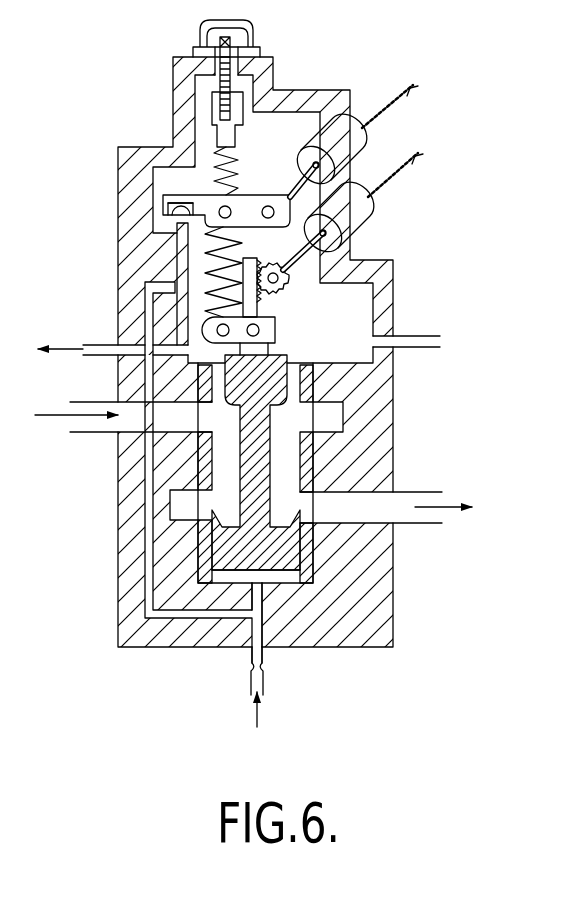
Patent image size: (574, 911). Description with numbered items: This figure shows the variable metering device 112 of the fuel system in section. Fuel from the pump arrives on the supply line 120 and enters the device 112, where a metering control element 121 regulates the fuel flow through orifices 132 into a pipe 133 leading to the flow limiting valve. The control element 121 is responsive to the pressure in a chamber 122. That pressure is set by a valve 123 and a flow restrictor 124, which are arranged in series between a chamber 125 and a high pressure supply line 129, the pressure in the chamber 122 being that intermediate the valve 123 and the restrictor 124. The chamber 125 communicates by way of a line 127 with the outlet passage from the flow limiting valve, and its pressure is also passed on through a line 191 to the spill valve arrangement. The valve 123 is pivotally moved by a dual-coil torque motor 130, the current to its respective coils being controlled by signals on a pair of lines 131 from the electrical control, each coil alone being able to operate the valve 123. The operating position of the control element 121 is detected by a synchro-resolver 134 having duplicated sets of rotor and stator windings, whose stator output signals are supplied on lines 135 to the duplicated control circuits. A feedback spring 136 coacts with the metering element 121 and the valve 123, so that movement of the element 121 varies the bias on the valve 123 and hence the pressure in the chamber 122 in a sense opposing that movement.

The variable metering device 112 is at (156, 662).
The supply line 120 is at (95, 423).
The metering control element 121 is at (312, 550).
The chamber 122 is at (282, 573).
The valve 123 is at (160, 221).
The flow restrictor 124 is at (261, 666).
The chamber 125 is at (281, 125).
The line 127 is at (447, 318).
The high pressure supply line 129 is at (250, 680).
The dual-coil torque motor 130 is at (342, 138).
The lines 131 is at (406, 98).
The orifices 132 is at (307, 505).
The pipe 133 is at (437, 505).
The synchro-resolver 134 is at (347, 218).
The lines 135 is at (405, 174).
The feedback spring 136 is at (240, 267).
The line 191 is at (92, 343).